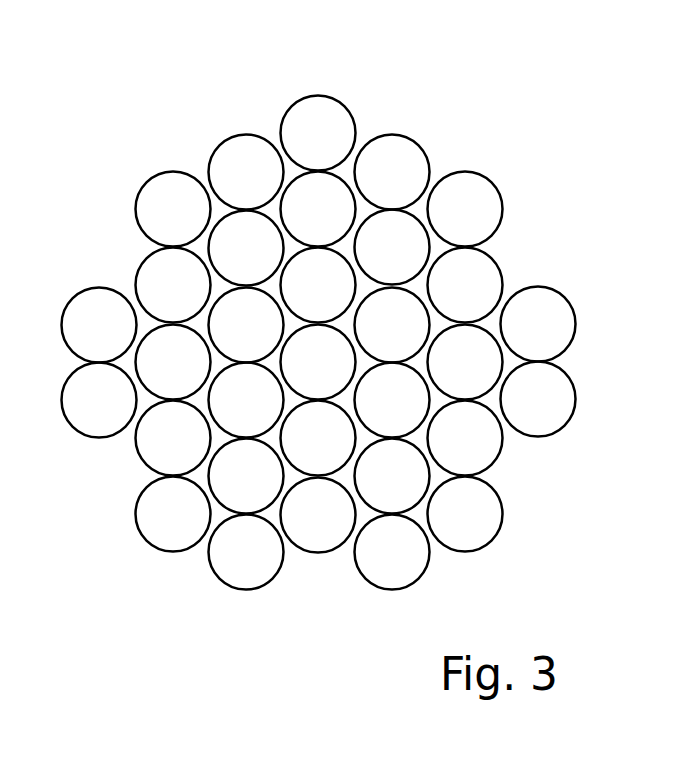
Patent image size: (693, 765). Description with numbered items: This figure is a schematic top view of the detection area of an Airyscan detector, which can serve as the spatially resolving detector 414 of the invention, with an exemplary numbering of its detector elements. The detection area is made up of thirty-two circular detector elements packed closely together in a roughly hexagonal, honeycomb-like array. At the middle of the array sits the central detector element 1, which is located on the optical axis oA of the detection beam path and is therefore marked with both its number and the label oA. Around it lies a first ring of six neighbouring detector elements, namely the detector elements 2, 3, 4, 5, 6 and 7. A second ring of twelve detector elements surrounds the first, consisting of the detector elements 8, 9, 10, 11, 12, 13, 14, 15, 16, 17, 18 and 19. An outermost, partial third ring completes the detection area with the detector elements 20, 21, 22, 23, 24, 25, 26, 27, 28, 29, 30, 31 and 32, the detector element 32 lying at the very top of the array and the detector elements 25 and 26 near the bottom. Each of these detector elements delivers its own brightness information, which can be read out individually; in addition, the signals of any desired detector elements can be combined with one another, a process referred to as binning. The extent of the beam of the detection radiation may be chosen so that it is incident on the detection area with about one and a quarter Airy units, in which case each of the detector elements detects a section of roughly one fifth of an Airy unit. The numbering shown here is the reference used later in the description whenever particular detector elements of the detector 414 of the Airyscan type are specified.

The spatially resolving detector 414 is at (318, 343).
The detector element 29 is at (99, 325).
The detector element 28 is at (99, 400).
The detector element 30 is at (173, 209).
The detector element 17 is at (173, 285).
The detector element 16 is at (173, 362).
The detector element 15 is at (173, 438).
The detector element 27 is at (173, 514).
The detector element 31 is at (246, 172).
The detector element 18 is at (246, 248).
The detector element 6 is at (246, 325).
The detector element 5 is at (246, 400).
The detector element 14 is at (246, 476).
The detector element 26 is at (246, 552).
The detector element 32 is at (318, 133).
The detector element 19 is at (318, 209).
The detector element 7 is at (318, 285).
The central detector element 1 is at (318, 362).
The detector element 4 is at (318, 438).
The detector element 13 is at (318, 515).
The detector element 20 is at (392, 172).
The detector element 8 is at (392, 247).
The detector element 2 is at (392, 325).
The detector element 3 is at (392, 400).
The detector element 12 is at (392, 476).
The detector element 25 is at (392, 552).
The detector element 21 is at (465, 209).
The detector element 9 is at (465, 285).
The detector element 10 is at (465, 362).
The detector element 11 is at (465, 438).
The detector element 24 is at (465, 514).
The detector element 22 is at (538, 324).
The detector element 23 is at (538, 399).